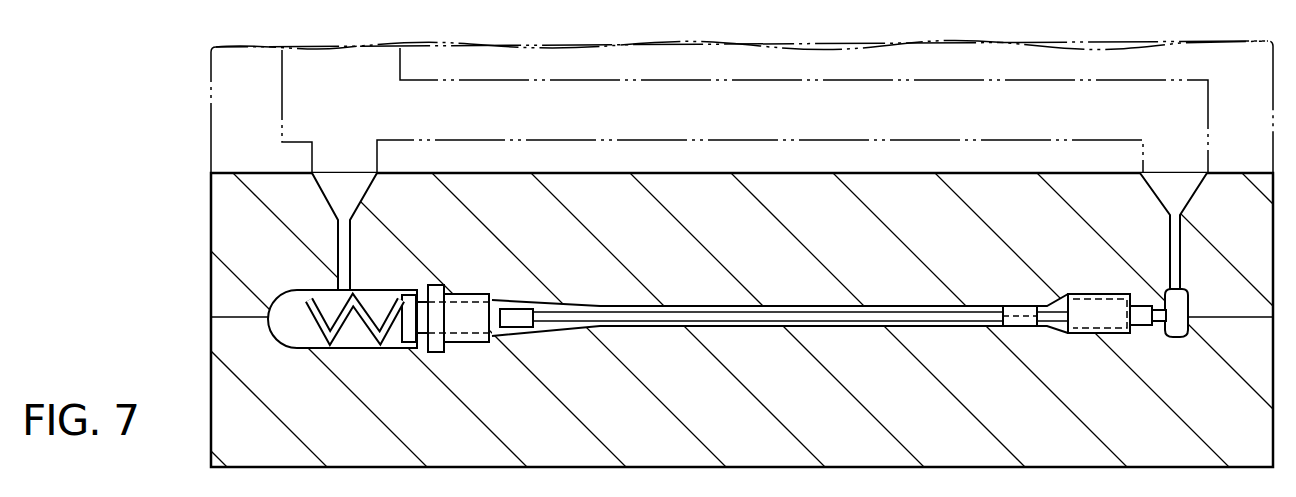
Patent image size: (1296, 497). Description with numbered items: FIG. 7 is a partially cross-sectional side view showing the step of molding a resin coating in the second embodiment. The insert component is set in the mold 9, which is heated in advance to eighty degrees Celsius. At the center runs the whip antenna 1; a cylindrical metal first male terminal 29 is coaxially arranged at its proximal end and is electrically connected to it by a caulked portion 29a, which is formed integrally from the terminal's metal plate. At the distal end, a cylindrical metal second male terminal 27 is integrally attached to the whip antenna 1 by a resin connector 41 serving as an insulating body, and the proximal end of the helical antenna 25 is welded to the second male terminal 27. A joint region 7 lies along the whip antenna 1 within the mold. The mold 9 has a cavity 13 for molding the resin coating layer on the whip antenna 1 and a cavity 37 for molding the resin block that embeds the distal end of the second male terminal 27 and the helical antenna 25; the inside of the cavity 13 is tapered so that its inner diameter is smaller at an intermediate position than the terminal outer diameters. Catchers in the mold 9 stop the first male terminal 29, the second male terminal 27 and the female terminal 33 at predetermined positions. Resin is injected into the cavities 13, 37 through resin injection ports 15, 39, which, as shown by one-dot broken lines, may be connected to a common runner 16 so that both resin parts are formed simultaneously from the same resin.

The whip antenna 1 is at (882, 313).
The joint 7 is at (1023, 313).
The mold 9 is at (219, 340).
The cavity 13 is at (558, 326).
The resin injection port 15 is at (1170, 183).
The common runner 16 is at (306, 76).
The helical antenna 25 is at (374, 308).
The second male terminal 27 is at (493, 302).
The first male terminal 29 is at (1093, 316).
The caulked portion 29a is at (1142, 318).
The female terminal 33 is at (468, 327).
The cavity 37 is at (360, 340).
The resin injection port 39 is at (346, 183).
The resin connector 41 is at (520, 323).